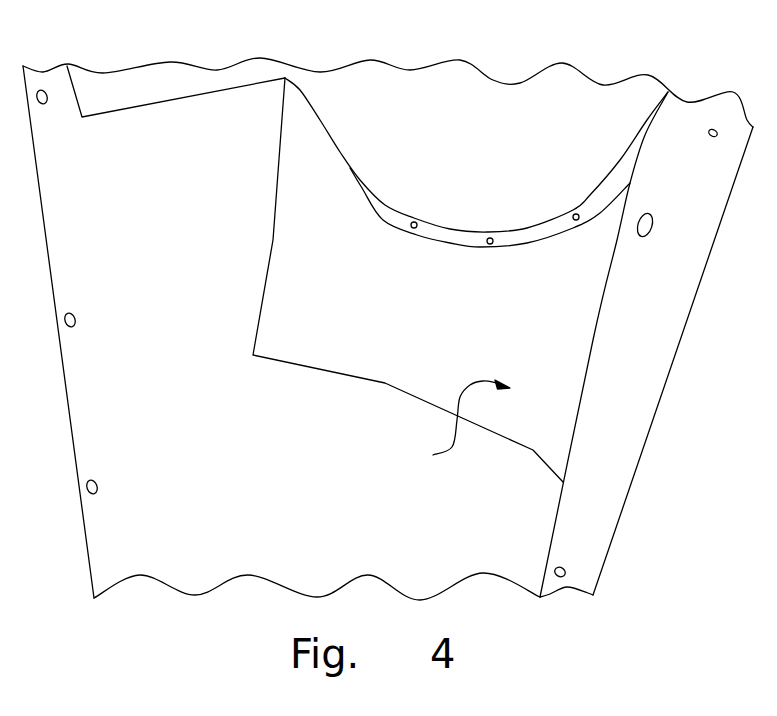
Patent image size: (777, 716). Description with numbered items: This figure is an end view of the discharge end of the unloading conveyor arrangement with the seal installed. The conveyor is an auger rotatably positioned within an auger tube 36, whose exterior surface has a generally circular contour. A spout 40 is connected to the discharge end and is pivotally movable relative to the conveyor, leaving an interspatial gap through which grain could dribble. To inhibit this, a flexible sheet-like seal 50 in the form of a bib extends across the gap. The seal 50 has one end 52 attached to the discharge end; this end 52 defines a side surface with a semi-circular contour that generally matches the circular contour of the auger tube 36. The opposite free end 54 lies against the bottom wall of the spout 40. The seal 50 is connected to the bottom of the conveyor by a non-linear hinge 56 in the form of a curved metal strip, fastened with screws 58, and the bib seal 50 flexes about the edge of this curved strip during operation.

The auger tube 36 is at (482, 140).
The spout 40 is at (222, 542).
The sheet-like seal 50 is at (456, 426).
The end 52 is at (377, 230).
The free end 54 is at (375, 362).
The non-linear hinge 56 is at (452, 238).
The screws 58 is at (490, 244).